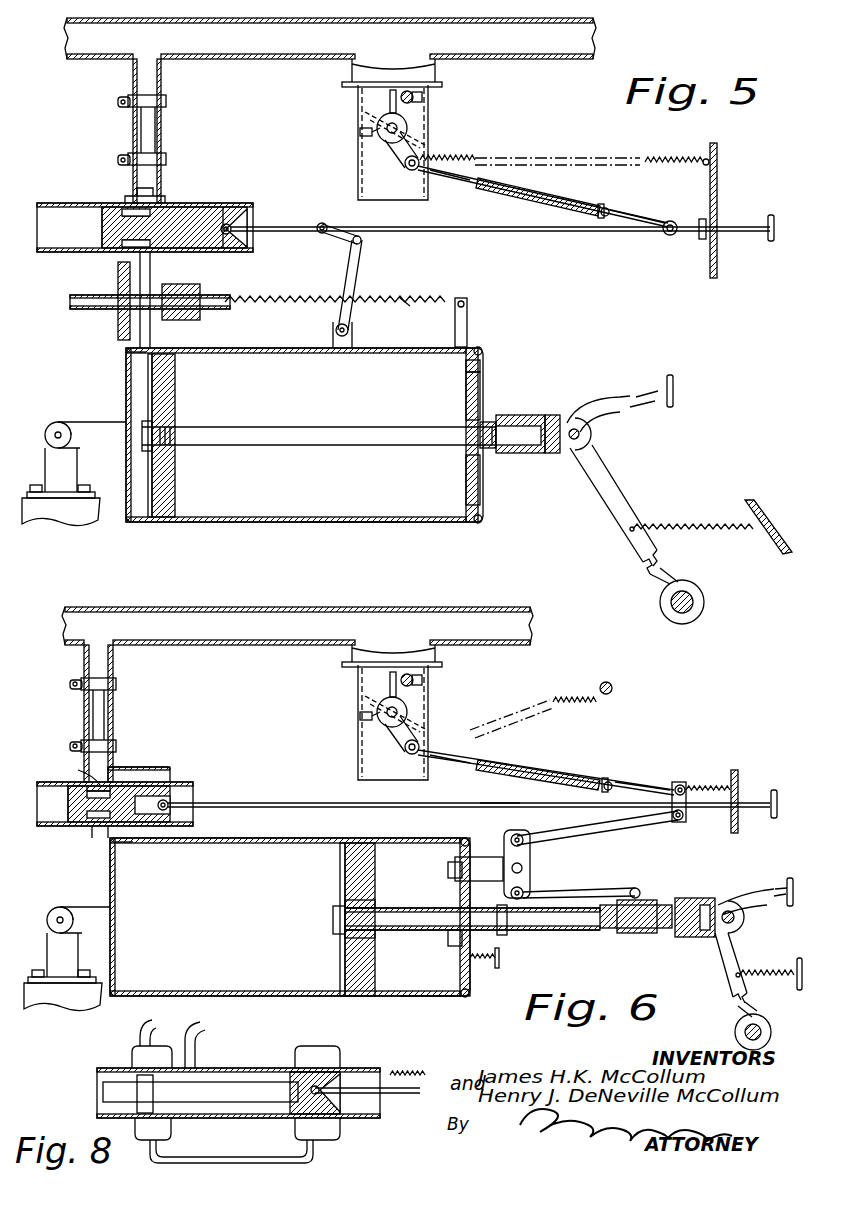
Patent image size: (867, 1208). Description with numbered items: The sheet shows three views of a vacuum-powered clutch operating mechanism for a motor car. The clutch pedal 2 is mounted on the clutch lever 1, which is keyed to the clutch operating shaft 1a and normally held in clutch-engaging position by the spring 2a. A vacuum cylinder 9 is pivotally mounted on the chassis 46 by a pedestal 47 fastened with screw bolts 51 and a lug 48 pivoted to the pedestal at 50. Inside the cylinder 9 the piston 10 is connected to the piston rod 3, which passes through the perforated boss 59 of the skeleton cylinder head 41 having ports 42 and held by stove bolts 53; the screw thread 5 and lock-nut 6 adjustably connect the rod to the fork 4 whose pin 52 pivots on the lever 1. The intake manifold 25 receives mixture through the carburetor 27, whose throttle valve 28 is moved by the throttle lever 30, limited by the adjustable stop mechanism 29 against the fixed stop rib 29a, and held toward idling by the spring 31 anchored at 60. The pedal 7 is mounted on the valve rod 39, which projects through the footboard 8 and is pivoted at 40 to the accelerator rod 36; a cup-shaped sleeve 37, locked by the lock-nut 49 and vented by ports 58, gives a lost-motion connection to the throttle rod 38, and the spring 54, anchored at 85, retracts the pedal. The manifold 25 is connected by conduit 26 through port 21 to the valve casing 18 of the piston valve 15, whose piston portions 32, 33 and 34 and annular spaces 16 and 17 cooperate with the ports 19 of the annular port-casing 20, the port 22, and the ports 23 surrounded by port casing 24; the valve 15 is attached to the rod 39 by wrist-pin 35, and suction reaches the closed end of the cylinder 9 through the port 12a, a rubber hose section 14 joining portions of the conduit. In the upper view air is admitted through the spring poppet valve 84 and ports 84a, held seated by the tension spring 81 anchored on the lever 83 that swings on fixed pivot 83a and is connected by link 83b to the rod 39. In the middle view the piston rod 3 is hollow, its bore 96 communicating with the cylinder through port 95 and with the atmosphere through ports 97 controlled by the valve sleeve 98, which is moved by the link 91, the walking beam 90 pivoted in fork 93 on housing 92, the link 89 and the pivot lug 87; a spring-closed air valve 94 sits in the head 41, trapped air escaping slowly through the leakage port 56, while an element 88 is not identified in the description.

In FIG. 5, the clutch lever 1 is at (615, 498).
In FIG. 6, the clutch lever 1 is at (725, 956).
In FIG. 5, the clutch operating shaft 1a is at (701, 610).
In FIG. 6, the clutch operating shaft 1a is at (734, 1034).
In FIG. 5, the clutch pedal 2 is at (673, 391).
In FIG. 6, the clutch pedal 2 is at (791, 871).
In FIG. 5, the clutch spring 2a is at (703, 523).
In FIG. 6, the clutch spring 2a is at (778, 968).
In FIG. 5, the piston rod 3 is at (312, 443).
In FIG. 6, the piston rod 3 is at (588, 935).
In FIG. 5, the fork 4 is at (542, 455).
In FIG. 5, the screw thread 5 is at (532, 415).
In FIG. 5, the lock-nut 6 is at (500, 455).
In FIG. 5, the pedal 7 is at (772, 215).
In FIG. 6, the pedal 7 is at (785, 781).
In FIG. 5, the footboard 8 is at (716, 203).
In FIG. 6, the footboard 8 is at (739, 783).
In FIG. 5, the vacuum cylinder 9 is at (290, 348).
In FIG. 6, the vacuum cylinder 9 is at (280, 840).
In FIG. 5, the piston 10 is at (177, 395).
In FIG. 6, the piston 10 is at (345, 858).
In FIG. 5, the cylinder port 12a is at (128, 355).
In FIG. 6, the cylinder port 12a is at (120, 844).
In FIG. 5, the rubber hose section 14 is at (162, 129).
In FIG. 6, the rubber hose section 14 is at (114, 710).
In FIG. 5, the piston valve 15 is at (102, 230).
In FIG. 6, the piston valve 15 is at (75, 810).
In FIG. 6, the annular valve space 16 is at (100, 826).
In FIG. 8, the annular valve space 17 is at (265, 1108).
In FIG. 5, the valve casing 18 is at (190, 204).
In FIG. 6, the valve casing 18 is at (190, 786).
In FIG. 8, the valve casing 18 is at (240, 1068).
In FIG. 5, the ports 19 is at (130, 205).
In FIG. 6, the ports 19 is at (140, 780).
In FIG. 8, the ports 19 is at (172, 1050).
In FIG. 5, the annular port-casing 20 is at (160, 196).
In FIG. 6, the annular port-casing 20 is at (170, 768).
In FIG. 8, the annular port-casing 20 is at (132, 1058).
In FIG. 6, the port 21 is at (76, 772).
In FIG. 8, the port 22 is at (215, 1077).
In FIG. 8, the ports 23 is at (340, 1055).
In FIG. 8, the annular port casing 24 is at (320, 1046).
In FIG. 5, the intake manifold 25 is at (320, 25).
In FIG. 6, the intake manifold 25 is at (247, 600).
In FIG. 5, the conduit 26 is at (163, 80).
In FIG. 6, the conduit 26 is at (113, 663).
In FIG. 5, the carburetor 27 is at (358, 186).
In FIG. 6, the carburetor 27 is at (358, 768).
In FIG. 5, the throttle valve 28 is at (425, 129).
In FIG. 6, the throttle valve 28 is at (425, 717).
In FIG. 5, the adjustable stop mechanism 29 is at (420, 99).
In FIG. 6, the adjustable stop mechanism 29 is at (420, 684).
In FIG. 5, the fixed stop rib 29a is at (388, 98).
In FIG. 6, the fixed stop rib 29a is at (388, 684).
In FIG. 5, the throttle lever 30 is at (400, 160).
In FIG. 6, the throttle lever 30 is at (400, 745).
In FIG. 5, the throttle spring 31 is at (470, 162).
In FIG. 6, the throttle spring 31 is at (556, 700).
In FIG. 8, the piston portion 32 is at (110, 1091).
In FIG. 5, the piston portion 33 is at (97, 206).
In FIG. 6, the piston portion 33 is at (78, 795).
In FIG. 5, the right-hand piston section 34 is at (210, 244).
In FIG. 6, the right-hand piston section 34 is at (110, 838).
In FIG. 8, the right-hand piston section 34 is at (285, 1070).
In FIG. 5, the wrist-pin 35 is at (230, 222).
In FIG. 6, the wrist-pin 35 is at (185, 812).
In FIG. 5, the accelerator rod 36 is at (637, 206).
In FIG. 6, the accelerator rod 36 is at (642, 786).
In FIG. 5, the cup-shaped sleeve 37 is at (490, 192).
In FIG. 6, the cup-shaped sleeve 37 is at (535, 771).
In FIG. 5, the throttle rod 38 is at (450, 178).
In FIG. 6, the throttle rod 38 is at (447, 760).
In FIG. 5, the valve rod 39 is at (553, 233).
In FIG. 6, the valve rod 39 is at (372, 808).
In FIG. 8, the valve rod 39 is at (400, 1095).
In FIG. 5, the pivotal connection 40 is at (678, 221).
In FIG. 6, the pivotal connection 40 is at (678, 788).
In FIG. 5, the skeleton cylinder head 41 is at (482, 362).
In FIG. 6, the skeleton cylinder head 41 is at (465, 935).
In FIG. 5, the ports 42 is at (470, 380).
In FIG. 5, the chassis 46 is at (62, 525).
In FIG. 6, the chassis 46 is at (60, 1005).
In FIG. 5, the pedestal 47 is at (77, 465).
In FIG. 6, the pedestal 47 is at (78, 947).
In FIG. 5, the lug 48 is at (100, 430).
In FIG. 6, the lug 48 is at (108, 898).
In FIG. 5, the lock-nut 49 is at (610, 208).
In FIG. 6, the lock-nut 49 is at (615, 785).
In FIG. 5, the pivot 50 is at (60, 424).
In FIG. 6, the pivot 50 is at (58, 912).
In FIG. 5, the screw bolts 51 is at (35, 485).
In FIG. 6, the screw bolts 51 is at (36, 970).
In FIG. 5, the pin 52 is at (582, 437).
In FIG. 6, the pin 52 is at (737, 917).
In FIG. 5, the stove bolts 53 is at (482, 348).
In FIG. 6, the stove bolts 53 is at (467, 838).
In FIG. 5, the suction valve spring 54 is at (407, 300).
In FIG. 6, the suction valve spring 54 is at (712, 783).
In FIG. 8, the suction valve spring 54 is at (415, 1075).
In FIG. 5, the leakage port 56 is at (350, 522).
In FIG. 6, the leakage port 56 is at (435, 996).
In FIG. 5, the ports 58 is at (538, 192).
In FIG. 6, the ports 58 is at (543, 768).
In FIG. 5, the perforated boss 59 is at (488, 410).
In FIG. 6, the perforated boss 59 is at (510, 935).
In FIG. 5, the spring anchor 60 is at (705, 160).
In FIG. 6, the spring anchor 60 is at (612, 689).
In FIG. 5, the tension spring 81 is at (301, 300).
In FIG. 5, the lever 83 is at (362, 262).
In FIG. 5, the fixed pivot 83a is at (352, 331).
In FIG. 5, the pivoted link 83b is at (320, 235).
In FIG. 5, the spring poppet valve 84 is at (120, 322).
In FIG. 5, the ports 84a is at (195, 290).
In FIG. 5, the spring anchor 85 is at (469, 302).
In FIG. 6, the pivot lug 87 is at (686, 818).
In FIG. 6, the valve rod section 88 is at (495, 805).
In FIG. 6, the pivoted link 89 is at (622, 822).
In FIG. 6, the walking beam 90 is at (530, 850).
In FIG. 6, the pivoted link 91 is at (585, 892).
In FIG. 6, the housing 92 is at (478, 857).
In FIG. 6, the fork 93 is at (528, 872).
In FIG. 6, the air valve 94 is at (465, 965).
In FIG. 6, the port 95 is at (385, 900).
In FIG. 6, the bore 96 is at (600, 933).
In FIG. 6, the ports 97 is at (630, 935).
In FIG. 6, the valve sleeve 98 is at (640, 892).